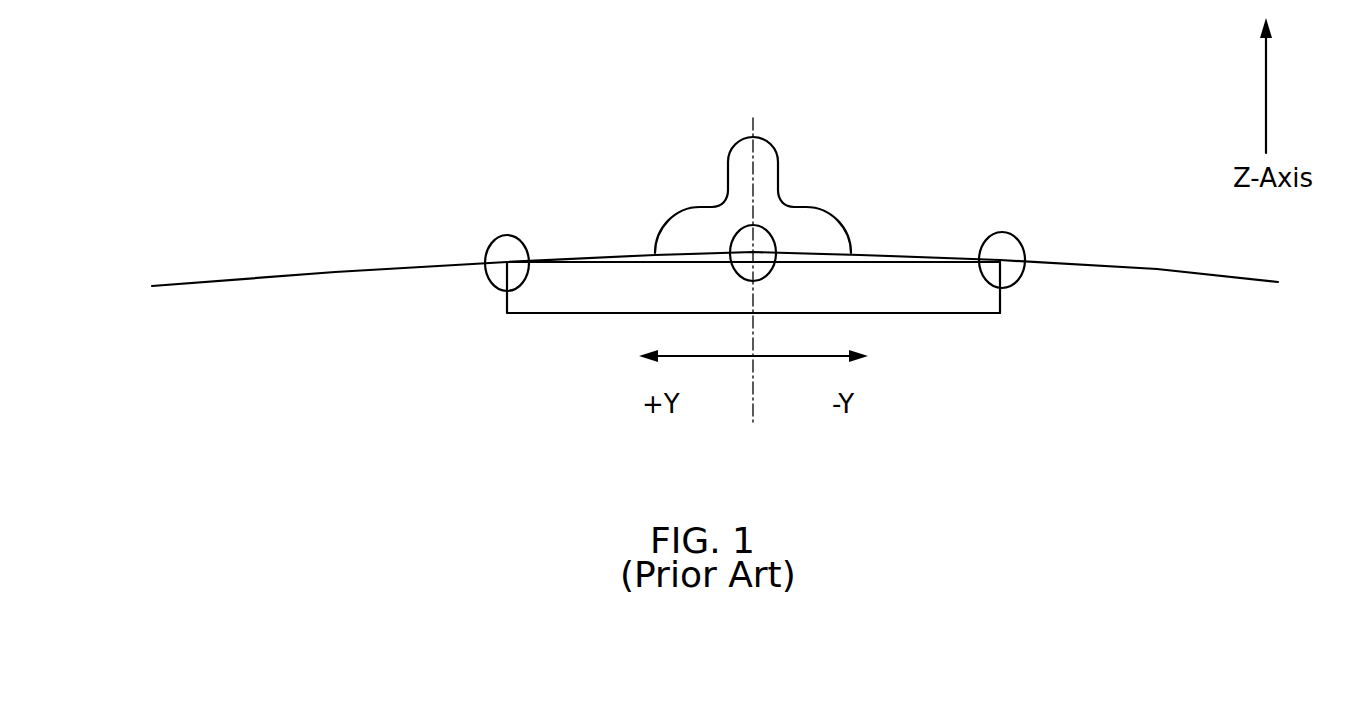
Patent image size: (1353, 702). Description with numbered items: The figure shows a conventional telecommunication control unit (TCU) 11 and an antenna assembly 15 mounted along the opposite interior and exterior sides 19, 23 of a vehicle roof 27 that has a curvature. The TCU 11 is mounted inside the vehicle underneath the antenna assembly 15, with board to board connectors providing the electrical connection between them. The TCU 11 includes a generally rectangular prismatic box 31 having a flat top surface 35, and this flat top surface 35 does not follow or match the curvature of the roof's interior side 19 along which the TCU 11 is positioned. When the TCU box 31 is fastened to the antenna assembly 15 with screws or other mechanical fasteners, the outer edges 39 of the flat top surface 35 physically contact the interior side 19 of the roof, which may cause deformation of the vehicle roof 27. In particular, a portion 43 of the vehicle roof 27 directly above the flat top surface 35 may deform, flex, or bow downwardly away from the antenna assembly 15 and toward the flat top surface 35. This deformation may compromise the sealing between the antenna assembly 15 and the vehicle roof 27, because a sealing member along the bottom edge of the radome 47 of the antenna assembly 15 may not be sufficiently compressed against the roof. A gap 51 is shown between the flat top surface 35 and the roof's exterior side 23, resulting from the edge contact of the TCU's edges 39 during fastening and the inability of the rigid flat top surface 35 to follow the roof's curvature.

The telecommunication control unit (TCU) 11 is at (753, 290).
The antenna assembly 15 is at (753, 162).
The interior side of vehicle roof 19 is at (715, 278).
The exterior side of vehicle roof 23 is at (205, 278).
The vehicle roof 27 is at (1157, 269).
The rectangular prismatic box 31 is at (973, 315).
The flat top surface 35 is at (886, 257).
The outer edges 39 is at (438, 160).
The portion of vehicle roof 43 is at (617, 256).
The radome 47 is at (746, 136).
The gap 51 is at (770, 210).